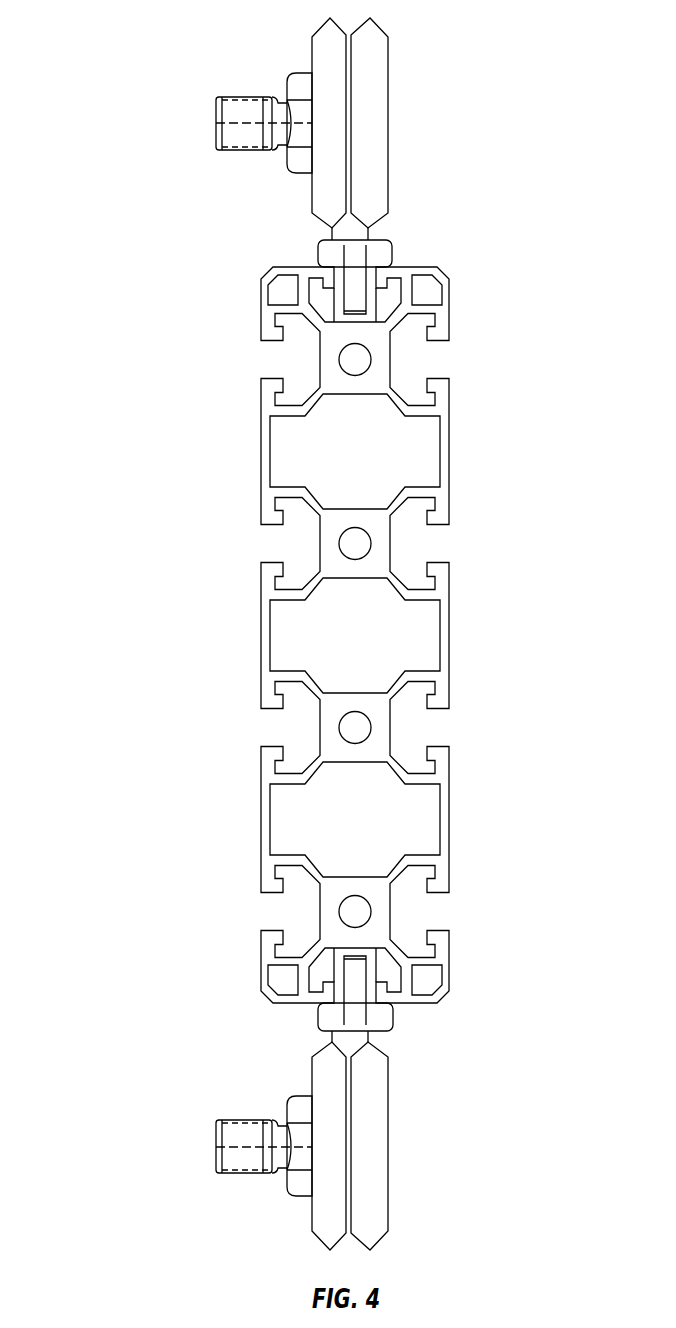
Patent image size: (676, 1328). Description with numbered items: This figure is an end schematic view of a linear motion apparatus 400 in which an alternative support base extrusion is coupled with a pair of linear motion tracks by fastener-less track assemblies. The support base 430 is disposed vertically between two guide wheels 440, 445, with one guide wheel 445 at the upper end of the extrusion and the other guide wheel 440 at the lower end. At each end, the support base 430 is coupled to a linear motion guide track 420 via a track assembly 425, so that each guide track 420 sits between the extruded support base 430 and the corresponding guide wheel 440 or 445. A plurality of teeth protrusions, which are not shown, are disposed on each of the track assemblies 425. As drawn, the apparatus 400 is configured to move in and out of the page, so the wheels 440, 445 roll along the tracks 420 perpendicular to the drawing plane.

The linear motion apparatus 400 is at (134, 38).
The linear motion guide track 420 is at (357, 264).
The track assembly 425 is at (393, 252).
The support base 430 is at (450, 635).
The guide wheel 440 is at (387, 1145).
The guide wheel 445 is at (388, 125).